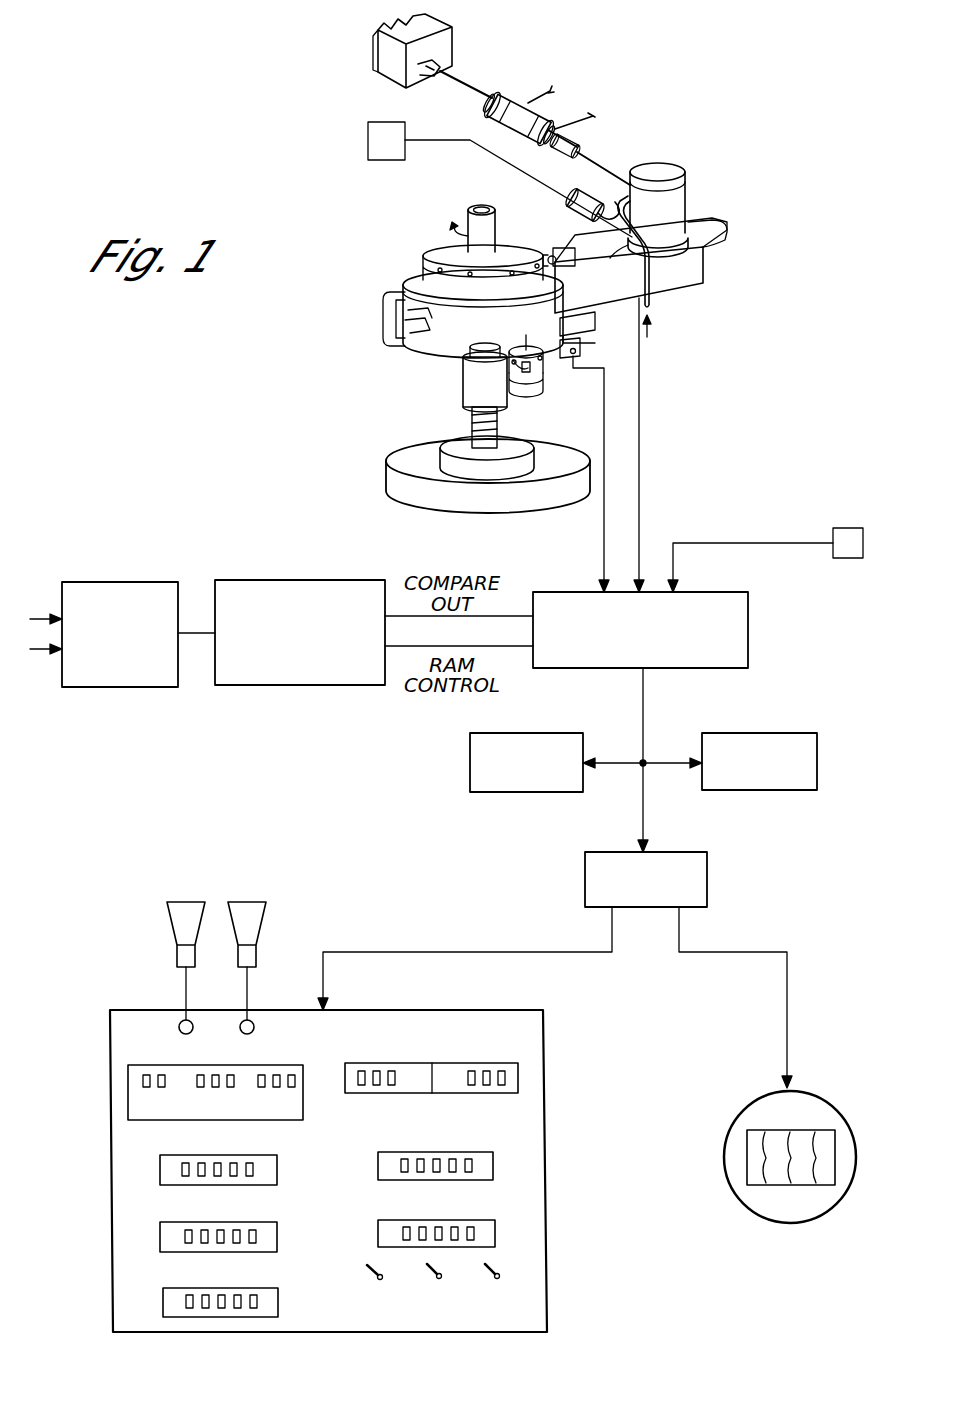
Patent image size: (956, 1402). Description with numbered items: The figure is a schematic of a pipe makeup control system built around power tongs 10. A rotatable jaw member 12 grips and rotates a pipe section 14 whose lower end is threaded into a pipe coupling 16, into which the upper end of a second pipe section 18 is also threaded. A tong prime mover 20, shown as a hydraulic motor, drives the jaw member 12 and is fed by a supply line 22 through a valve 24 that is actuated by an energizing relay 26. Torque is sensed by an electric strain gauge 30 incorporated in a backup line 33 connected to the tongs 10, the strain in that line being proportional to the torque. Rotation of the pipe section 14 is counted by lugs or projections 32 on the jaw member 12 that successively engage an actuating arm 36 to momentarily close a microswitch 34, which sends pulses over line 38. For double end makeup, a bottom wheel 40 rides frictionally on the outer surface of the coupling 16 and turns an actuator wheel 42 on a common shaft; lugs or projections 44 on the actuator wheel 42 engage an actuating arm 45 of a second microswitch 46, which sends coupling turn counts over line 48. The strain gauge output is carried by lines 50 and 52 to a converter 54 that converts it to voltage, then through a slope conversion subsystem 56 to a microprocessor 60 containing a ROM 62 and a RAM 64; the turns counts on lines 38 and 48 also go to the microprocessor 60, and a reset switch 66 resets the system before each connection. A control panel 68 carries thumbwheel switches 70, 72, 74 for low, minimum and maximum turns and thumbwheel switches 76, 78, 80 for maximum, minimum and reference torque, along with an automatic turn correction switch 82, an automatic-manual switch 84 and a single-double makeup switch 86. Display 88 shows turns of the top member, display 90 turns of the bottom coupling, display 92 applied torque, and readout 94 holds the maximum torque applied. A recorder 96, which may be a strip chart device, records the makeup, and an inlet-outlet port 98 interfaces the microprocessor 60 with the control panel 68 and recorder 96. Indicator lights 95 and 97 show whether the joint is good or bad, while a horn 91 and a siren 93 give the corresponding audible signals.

The power tongs 10 is at (708, 267).
The rotatable jaw member 12 is at (437, 257).
The pipe section 14 is at (484, 207).
The pipe coupling 16 is at (460, 382).
The second pipe section 18 is at (472, 430).
The tong prime mover 20 is at (687, 202).
The supply line 22 is at (653, 282).
The valve 24 is at (590, 200).
The energizing relay 26 is at (368, 141).
The electric strain gauge 30 is at (512, 118).
The lugs or projections 32 is at (483, 284).
The backup line 33 is at (463, 88).
The microswitch 34 is at (561, 247).
The actuating arm 36 is at (540, 250).
The line 38 is at (640, 498).
The bottom wheel 40 is at (540, 393).
The actuator wheel 42 is at (543, 364).
The lugs or projections 44 is at (518, 368).
The actuating arm 45 is at (578, 357).
The second microswitch 46 is at (573, 343).
The line 48 is at (604, 520).
The line 50 is at (551, 99).
The line 52 is at (592, 126).
The converter 54 is at (136, 582).
The slope conversion subsystem 56 is at (280, 580).
The microprocessor 60 is at (750, 626).
The ROM 62 is at (468, 766).
The RAM 64 is at (820, 768).
The reset switch 66 is at (847, 548).
The control panel 68 is at (108, 1020).
The thumbwheel switch 70 is at (145, 1081).
The thumbwheel switch 72 is at (200, 1080).
The thumbwheel switch 74 is at (290, 1074).
The thumbwheel switch 76 is at (160, 1166).
The thumbwheel switch 78 is at (160, 1232).
The thumbwheel switch 80 is at (163, 1297).
The automatic turn correction switch 82 is at (368, 1272).
The automatic-manual switch 84 is at (437, 1272).
The single-double makeup switch 86 is at (498, 1272).
The display 88 is at (366, 1094).
The display 90 is at (490, 1095).
The horn 91 is at (186, 900).
The display 92 is at (493, 1168).
The siren 93 is at (248, 900).
The readout 94 is at (495, 1230).
The indicator light 95 is at (180, 1021).
The recorder 96 is at (822, 1096).
The indicator light 97 is at (252, 1021).
The inlet-outlet port 98 is at (707, 853).